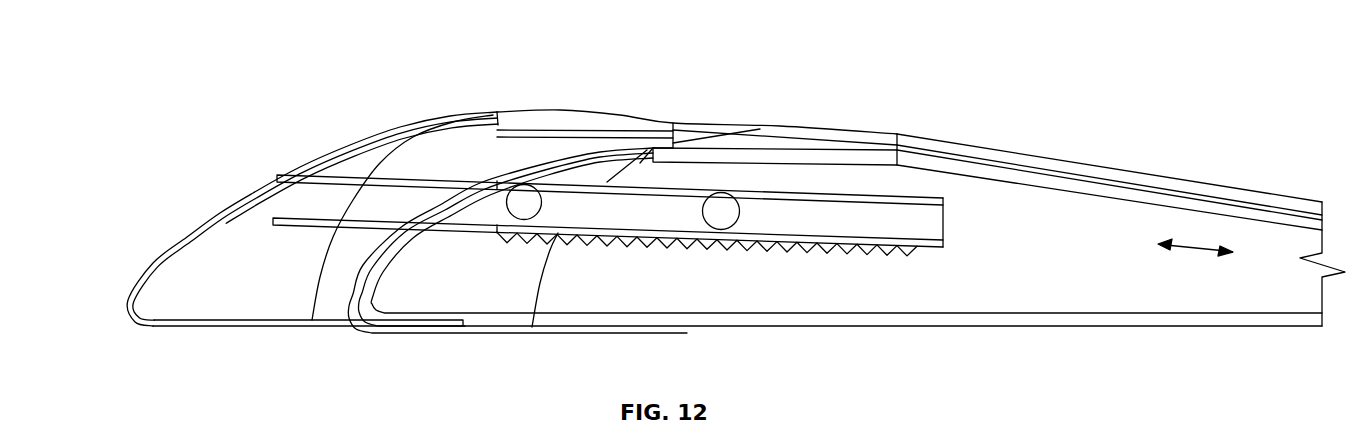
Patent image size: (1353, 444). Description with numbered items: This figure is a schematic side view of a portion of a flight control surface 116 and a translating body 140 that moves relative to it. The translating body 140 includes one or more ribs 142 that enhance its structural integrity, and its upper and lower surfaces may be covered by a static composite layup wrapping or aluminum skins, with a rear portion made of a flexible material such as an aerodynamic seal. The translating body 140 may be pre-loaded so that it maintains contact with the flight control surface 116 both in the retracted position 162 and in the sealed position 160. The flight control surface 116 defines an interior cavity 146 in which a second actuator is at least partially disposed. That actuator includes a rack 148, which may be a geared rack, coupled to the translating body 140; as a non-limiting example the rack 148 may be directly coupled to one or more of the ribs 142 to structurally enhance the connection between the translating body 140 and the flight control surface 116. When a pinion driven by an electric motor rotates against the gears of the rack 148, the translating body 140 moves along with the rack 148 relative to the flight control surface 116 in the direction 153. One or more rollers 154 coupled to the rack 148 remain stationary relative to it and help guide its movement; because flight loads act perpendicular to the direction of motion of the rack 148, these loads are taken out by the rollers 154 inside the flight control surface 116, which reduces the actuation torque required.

The flight control surface 116 is at (1204, 183).
The translating body 140 is at (584, 144).
The sealed position 160 is at (305, 152).
The retracted position 162 is at (873, 128).
The rib 142 is at (200, 268).
The interior cavity 146 is at (1050, 307).
The rack 148 is at (930, 218).
The direction 153 is at (1198, 249).
The roller 154 is at (523, 200).